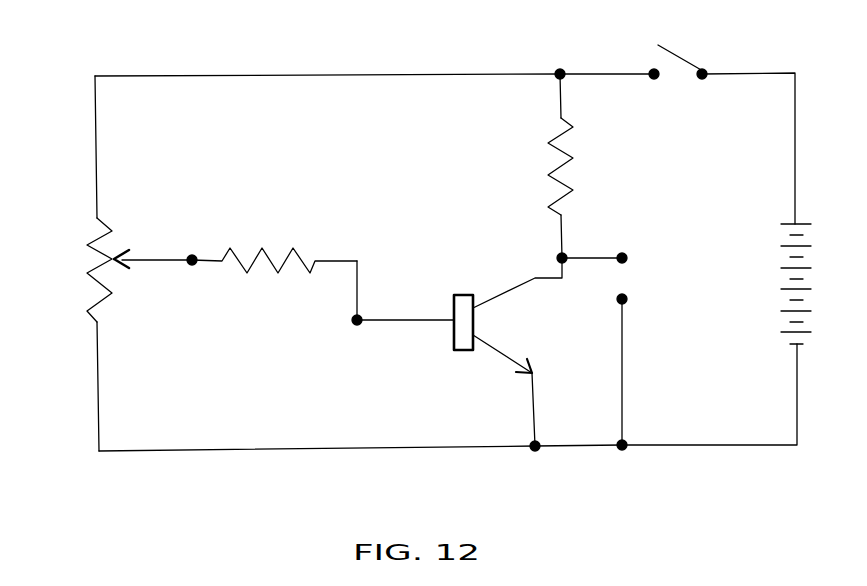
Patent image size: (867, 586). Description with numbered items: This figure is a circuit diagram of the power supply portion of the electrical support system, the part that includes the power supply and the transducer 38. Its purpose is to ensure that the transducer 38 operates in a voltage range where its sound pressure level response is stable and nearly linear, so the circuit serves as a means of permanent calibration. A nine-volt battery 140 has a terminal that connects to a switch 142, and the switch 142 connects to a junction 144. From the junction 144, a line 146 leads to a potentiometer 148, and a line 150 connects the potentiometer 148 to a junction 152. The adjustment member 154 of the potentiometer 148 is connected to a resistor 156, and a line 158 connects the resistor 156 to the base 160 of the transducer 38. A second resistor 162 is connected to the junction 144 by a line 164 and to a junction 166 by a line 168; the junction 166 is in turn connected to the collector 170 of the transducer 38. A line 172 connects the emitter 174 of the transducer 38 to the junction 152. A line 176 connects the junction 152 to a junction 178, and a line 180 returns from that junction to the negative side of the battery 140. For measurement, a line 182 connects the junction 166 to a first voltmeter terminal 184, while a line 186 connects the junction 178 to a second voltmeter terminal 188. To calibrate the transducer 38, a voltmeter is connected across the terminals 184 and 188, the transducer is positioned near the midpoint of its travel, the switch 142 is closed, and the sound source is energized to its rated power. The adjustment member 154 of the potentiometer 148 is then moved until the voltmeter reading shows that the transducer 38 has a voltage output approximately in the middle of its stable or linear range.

The transducer 38 is at (453, 305).
The battery 140 is at (805, 243).
The switch 142 is at (684, 53).
The junction 144 is at (558, 71).
The line 146 is at (203, 76).
The potentiometer 148 is at (94, 240).
The line 150 is at (99, 432).
The junction 152 is at (531, 449).
The adjustment member 154 is at (140, 259).
The resistor 156 is at (263, 259).
The line 158 is at (358, 280).
The base 160 is at (453, 325).
The resistor 162 is at (572, 175).
The line 164 is at (562, 98).
The junction 166 is at (556, 259).
The line 168 is at (561, 223).
The collector 170 is at (474, 311).
The line 172 is at (533, 423).
The emitter 174 is at (474, 338).
The line 176 is at (552, 447).
The junction 178 is at (626, 443).
The line 180 is at (658, 447).
The line 182 is at (585, 258).
The first voltmeter terminal 184 is at (623, 257).
The line 186 is at (623, 387).
The second voltmeter terminal 188 is at (624, 303).